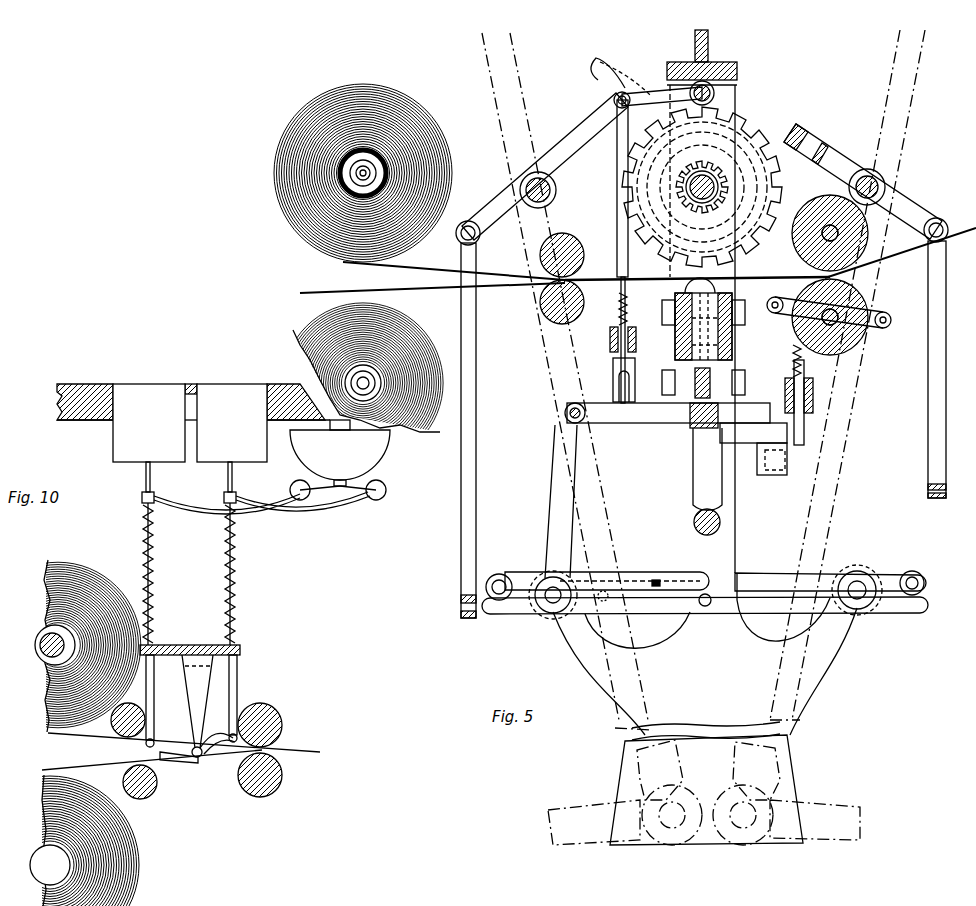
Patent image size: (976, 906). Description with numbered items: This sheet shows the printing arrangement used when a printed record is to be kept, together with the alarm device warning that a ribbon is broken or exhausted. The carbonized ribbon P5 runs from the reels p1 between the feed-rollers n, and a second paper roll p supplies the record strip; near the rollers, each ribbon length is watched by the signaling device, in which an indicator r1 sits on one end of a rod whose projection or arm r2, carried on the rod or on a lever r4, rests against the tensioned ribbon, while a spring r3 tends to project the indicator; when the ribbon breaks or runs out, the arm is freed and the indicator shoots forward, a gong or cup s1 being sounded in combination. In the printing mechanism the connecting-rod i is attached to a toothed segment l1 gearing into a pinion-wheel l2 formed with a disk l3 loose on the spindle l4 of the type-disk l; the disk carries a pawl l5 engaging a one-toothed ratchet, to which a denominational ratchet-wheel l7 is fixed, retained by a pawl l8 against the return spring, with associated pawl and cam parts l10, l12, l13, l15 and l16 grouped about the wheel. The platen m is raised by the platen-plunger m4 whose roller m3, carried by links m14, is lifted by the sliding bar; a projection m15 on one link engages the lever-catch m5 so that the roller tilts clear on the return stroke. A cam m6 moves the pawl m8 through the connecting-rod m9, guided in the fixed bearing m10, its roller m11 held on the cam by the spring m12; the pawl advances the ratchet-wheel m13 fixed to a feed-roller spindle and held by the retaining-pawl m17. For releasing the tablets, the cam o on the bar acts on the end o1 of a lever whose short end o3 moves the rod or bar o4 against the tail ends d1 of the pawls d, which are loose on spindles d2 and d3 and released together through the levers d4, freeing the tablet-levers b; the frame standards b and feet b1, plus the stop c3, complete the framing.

In FIG. 10, the indicator r1 is at (135, 745).
In FIG. 10, the projection or arm r2 is at (146, 478).
In FIG. 10, the spiral spring r3 is at (143, 535).
In FIG. 10, the lever r4 is at (195, 745).
In FIG. 10, the cup s1 is at (340, 453).
In FIG. 10, the feed-rollers n is at (282, 723).
In FIG. 5, the feed-rollers n is at (830, 275).
In FIG. 10, the ribbon P5 is at (181, 757).
In FIG. 5, the ribbon P5 is at (410, 272).
In FIG. 10, the paper roll p is at (70, 646).
In FIG. 10, the reels p1 is at (69, 840).
In FIG. 5, the tablet-levers b is at (703, 437).
In FIG. 5, the base feet b1 is at (704, 822).
In FIG. 5, the connecting-rod i is at (461, 580).
In FIG. 5, the type-disk l is at (616, 188).
In FIG. 5, the toothed segment l1 is at (863, 181).
In FIG. 5, the pinion-wheel l2 is at (614, 250).
In FIG. 5, the disk l3 is at (610, 335).
In FIG. 5, the spindle l4 is at (612, 384).
In FIG. 5, the pawl l5 is at (630, 305).
In FIG. 5, the ratchet-wheel l7 is at (702, 187).
In FIG. 5, the pawl l8 is at (660, 90).
In FIG. 5, the pawl l10 is at (620, 76).
In FIG. 5, the pinion l12 is at (730, 185).
In FIG. 5, the ratchet l13 is at (740, 160).
In FIG. 5, the cam l15 is at (735, 135).
In FIG. 5, the pawl l16 is at (720, 120).
In FIG. 5, the platen m is at (703, 334).
In FIG. 5, the roller m3 is at (706, 383).
In FIG. 5, the platen-plunger m4 is at (738, 345).
In FIG. 5, the lever-catch m5 is at (704, 415).
In FIG. 5, the cam m6 is at (767, 487).
In FIG. 5, the pawl m8 is at (772, 300).
In FIG. 5, the connecting-rod m9 is at (804, 426).
In FIG. 5, the fixed bearing m10 is at (814, 388).
In FIG. 5, the roller m11 is at (785, 455).
In FIG. 5, the spring m12 is at (793, 352).
In FIG. 5, the ratchet-wheel m13 is at (860, 340).
In FIG. 5, the links m14 is at (725, 340).
In FIG. 5, the projection m15 is at (668, 422).
In FIG. 5, the retaining-pawl m17 is at (885, 318).
In FIG. 5, the cam o is at (661, 409).
In FIG. 5, the end of lever o1 is at (580, 417).
In FIG. 5, the short end of lever o3 is at (572, 508).
In FIG. 5, the rod or bar o4 is at (503, 583).
In FIG. 5, the pawls d is at (645, 575).
In FIG. 5, the tail end of pawls d1 is at (505, 612).
In FIG. 5, the spindle d2 is at (543, 612).
In FIG. 5, the spindle d3 is at (862, 608).
In FIG. 5, the lever d4 is at (677, 601).
In FIG. 5, the stop c3 is at (662, 584).